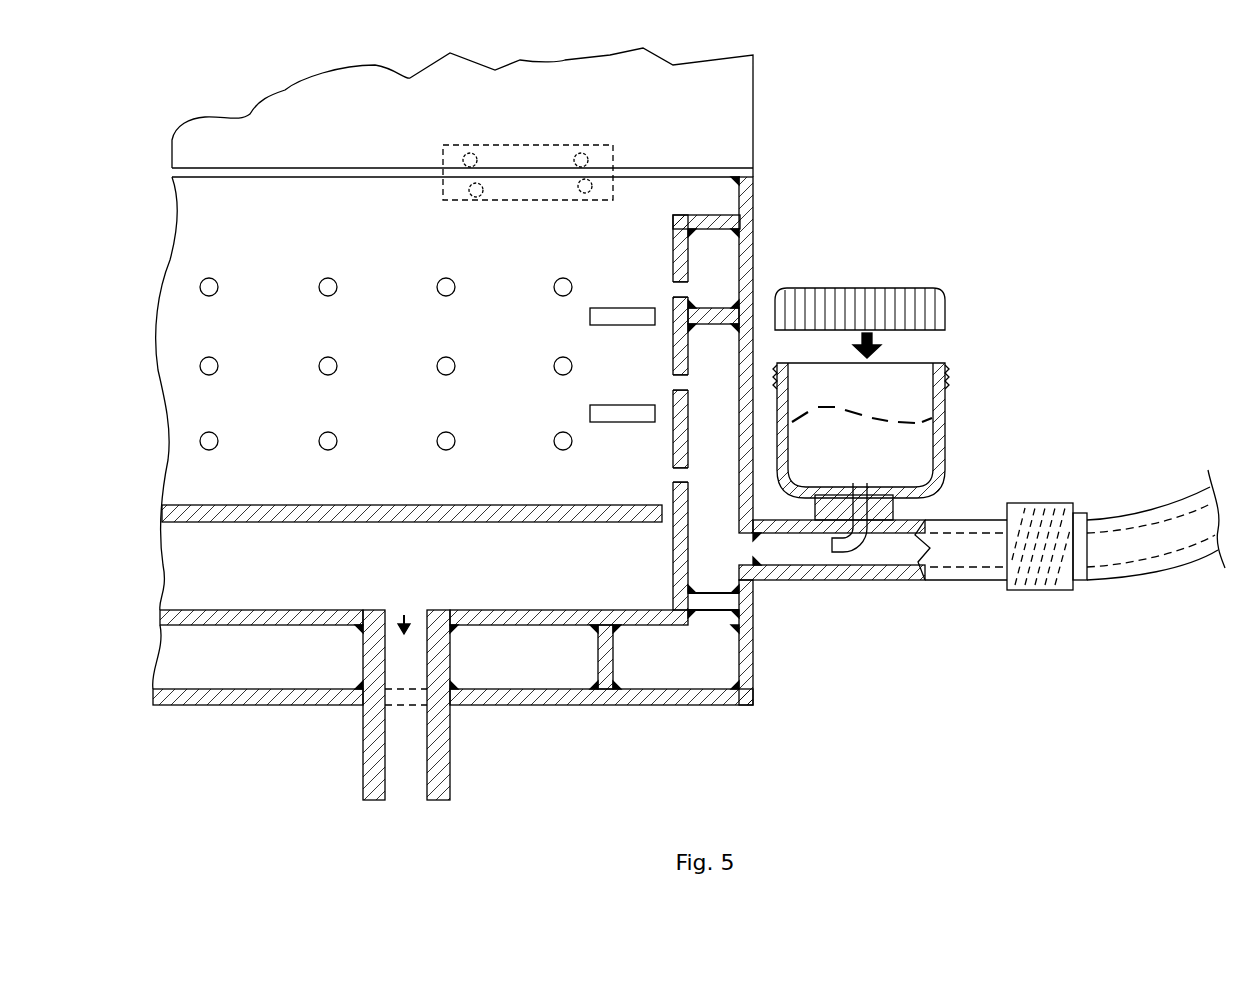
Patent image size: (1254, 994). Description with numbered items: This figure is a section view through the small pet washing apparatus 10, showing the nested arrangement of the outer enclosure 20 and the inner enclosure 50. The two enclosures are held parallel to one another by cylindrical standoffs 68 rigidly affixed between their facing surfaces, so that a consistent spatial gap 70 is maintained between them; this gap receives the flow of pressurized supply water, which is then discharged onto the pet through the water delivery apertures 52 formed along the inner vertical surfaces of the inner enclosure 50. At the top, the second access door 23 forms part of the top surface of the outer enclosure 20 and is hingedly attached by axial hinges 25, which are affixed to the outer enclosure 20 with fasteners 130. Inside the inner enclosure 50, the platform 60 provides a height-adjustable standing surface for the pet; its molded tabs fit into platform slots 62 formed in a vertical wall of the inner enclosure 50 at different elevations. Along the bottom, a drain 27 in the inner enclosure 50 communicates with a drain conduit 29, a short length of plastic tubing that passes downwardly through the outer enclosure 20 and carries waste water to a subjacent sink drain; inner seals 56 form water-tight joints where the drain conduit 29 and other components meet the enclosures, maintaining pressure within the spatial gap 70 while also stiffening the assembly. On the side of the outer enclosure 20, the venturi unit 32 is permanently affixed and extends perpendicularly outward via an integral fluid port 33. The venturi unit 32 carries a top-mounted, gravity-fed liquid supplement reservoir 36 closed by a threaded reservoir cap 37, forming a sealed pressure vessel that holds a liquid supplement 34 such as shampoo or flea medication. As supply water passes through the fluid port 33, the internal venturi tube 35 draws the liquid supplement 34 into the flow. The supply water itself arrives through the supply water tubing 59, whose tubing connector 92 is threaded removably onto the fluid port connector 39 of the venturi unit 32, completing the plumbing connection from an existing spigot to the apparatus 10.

The small pet washing apparatus 10 is at (1038, 148).
The outer enclosure 20 is at (282, 705).
The second access door 23 is at (756, 132).
The axial hinges 25 is at (455, 145).
The drains 27 is at (415, 616).
The drain conduits 29 is at (363, 775).
The venturi unit 32 is at (975, 333).
The fluid port 33 is at (800, 580).
The liquid supplement 34 is at (912, 425).
The internal venturi tube 35 is at (862, 550).
The liquid supplement reservoir 36 is at (945, 420).
The reservoir cap 37 is at (935, 290).
The fluid port connector 39 is at (1040, 540).
The inner enclosure 50 is at (211, 625).
The water delivery apertures 52 is at (440, 358).
The inner seals 56 is at (746, 225).
The supply water tubing 59 is at (1150, 568).
The platform 60 is at (372, 505).
The platform slots 62 is at (588, 412).
The standoffs 68 is at (722, 318).
The spatial gap 70 is at (711, 432).
The tubing connector 92 is at (1058, 590).
The fasteners 130 is at (590, 184).